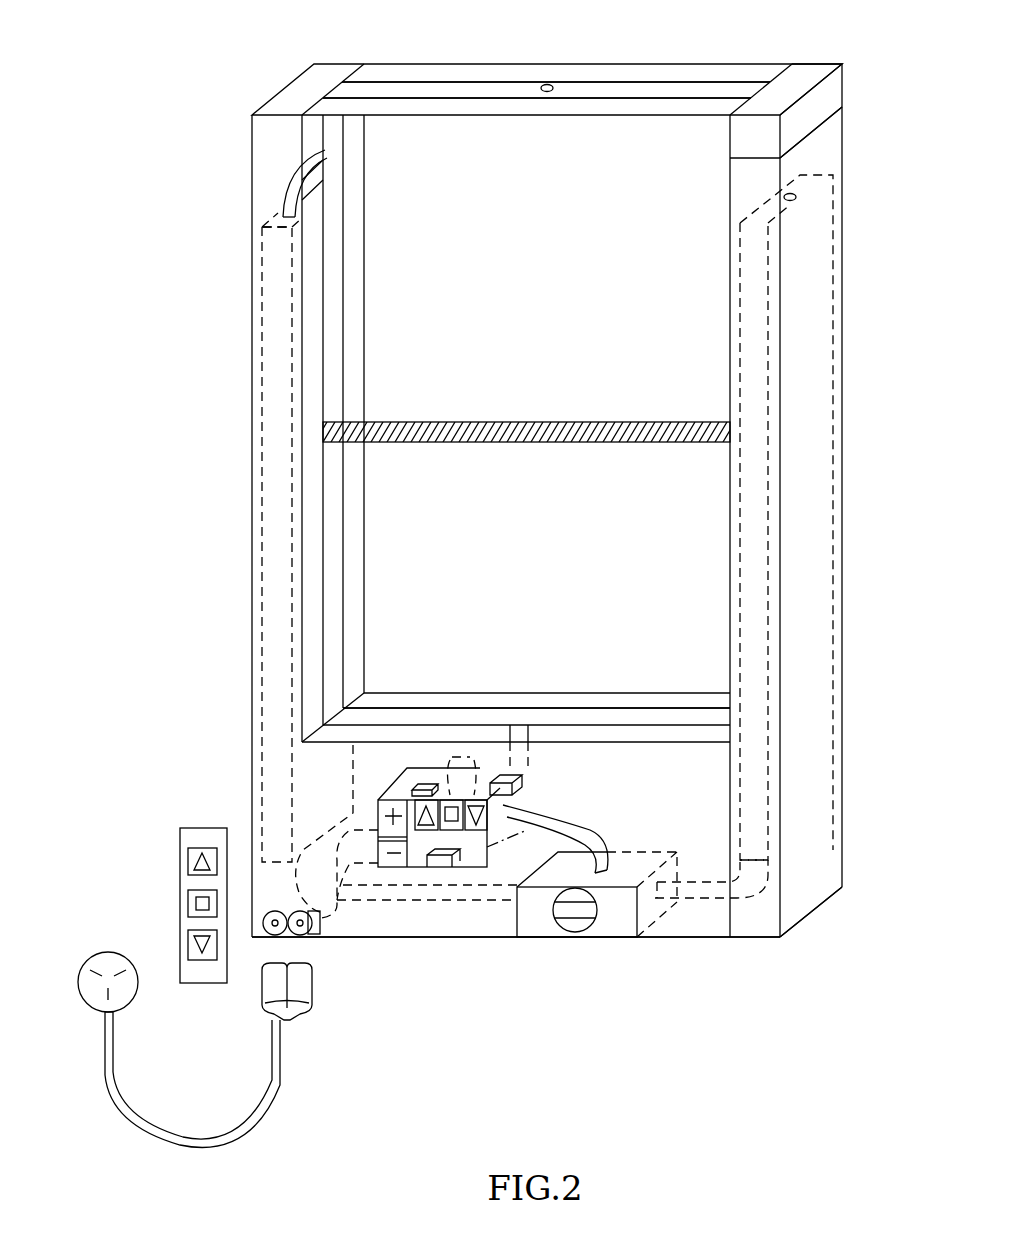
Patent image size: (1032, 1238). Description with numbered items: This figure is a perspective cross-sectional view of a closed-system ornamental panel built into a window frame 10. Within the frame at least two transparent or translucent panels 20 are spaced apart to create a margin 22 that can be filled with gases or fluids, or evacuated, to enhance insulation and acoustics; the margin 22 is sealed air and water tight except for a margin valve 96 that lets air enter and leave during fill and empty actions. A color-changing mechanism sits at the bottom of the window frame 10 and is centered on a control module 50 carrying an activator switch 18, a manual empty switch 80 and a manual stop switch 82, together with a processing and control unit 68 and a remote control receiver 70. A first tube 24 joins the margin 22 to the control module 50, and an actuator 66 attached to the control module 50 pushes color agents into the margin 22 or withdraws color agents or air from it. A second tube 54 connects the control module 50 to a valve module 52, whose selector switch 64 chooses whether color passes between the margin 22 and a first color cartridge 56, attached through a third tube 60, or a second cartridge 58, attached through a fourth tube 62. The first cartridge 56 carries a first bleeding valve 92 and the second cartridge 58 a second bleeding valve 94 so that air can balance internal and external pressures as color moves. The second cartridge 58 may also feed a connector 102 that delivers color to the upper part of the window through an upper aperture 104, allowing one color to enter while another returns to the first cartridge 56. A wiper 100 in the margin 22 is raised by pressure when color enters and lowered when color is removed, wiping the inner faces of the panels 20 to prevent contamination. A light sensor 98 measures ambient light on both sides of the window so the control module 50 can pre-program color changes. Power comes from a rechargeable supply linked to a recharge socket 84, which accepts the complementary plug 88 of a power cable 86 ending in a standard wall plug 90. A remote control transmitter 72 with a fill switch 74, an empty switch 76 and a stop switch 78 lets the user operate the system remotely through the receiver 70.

The window frame 10 is at (828, 136).
The activator switch 18 is at (428, 800).
The transparent or translucent panels 20 is at (645, 82).
The margin 22 is at (432, 92).
The first tube 24 is at (547, 732).
The control module 50 is at (407, 763).
The valve module 52 is at (668, 865).
The second tube 54 is at (590, 830).
The first color cartridge 56 is at (810, 375).
The second cartridge 58 is at (287, 300).
The third tube 60 is at (717, 900).
The fourth tube 62 is at (462, 905).
The selector switch 64 is at (585, 915).
The actuator 66 is at (530, 793).
The processing and control unit 68 is at (433, 790).
The remote control receiver 70 is at (437, 868).
The remote control transmitter 72 is at (210, 826).
The fill switch 74 is at (190, 852).
The empty switch 76 is at (190, 955).
The stop switch 78 is at (190, 903).
The manual empty switch 80 is at (476, 800).
The manual stop switch 82 is at (452, 800).
The recharge socket 84 is at (300, 935).
The power cable 86 is at (208, 1141).
The complementary plug 88 is at (312, 1000).
The standard wall plug 90 is at (117, 965).
The first bleeding valve 92 is at (800, 198).
The second bleeding valve 94 is at (297, 222).
The margin valve 96 is at (547, 84).
The light sensor 98 is at (810, 73).
The wiper 100 is at (500, 420).
The connector 102 is at (300, 167).
The upper aperture 104 is at (327, 143).